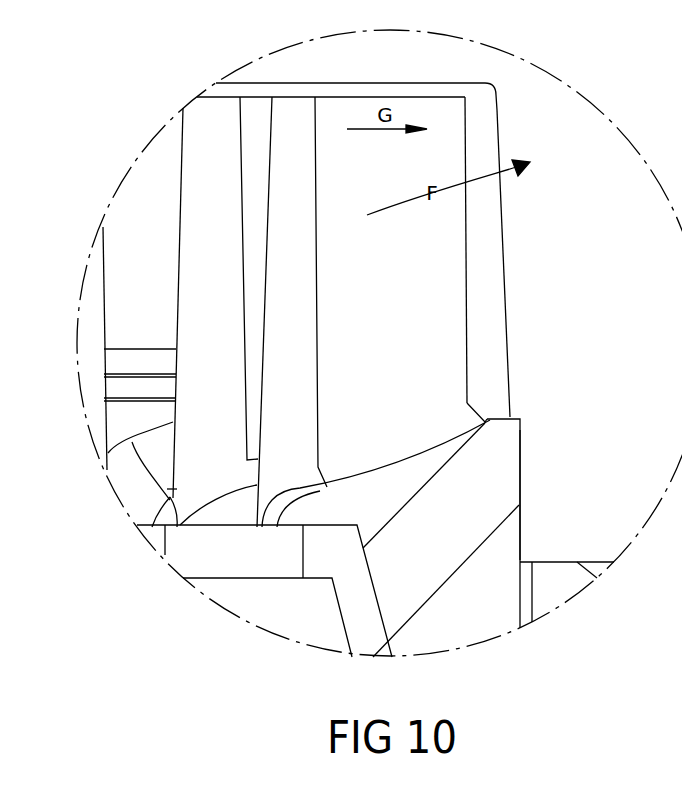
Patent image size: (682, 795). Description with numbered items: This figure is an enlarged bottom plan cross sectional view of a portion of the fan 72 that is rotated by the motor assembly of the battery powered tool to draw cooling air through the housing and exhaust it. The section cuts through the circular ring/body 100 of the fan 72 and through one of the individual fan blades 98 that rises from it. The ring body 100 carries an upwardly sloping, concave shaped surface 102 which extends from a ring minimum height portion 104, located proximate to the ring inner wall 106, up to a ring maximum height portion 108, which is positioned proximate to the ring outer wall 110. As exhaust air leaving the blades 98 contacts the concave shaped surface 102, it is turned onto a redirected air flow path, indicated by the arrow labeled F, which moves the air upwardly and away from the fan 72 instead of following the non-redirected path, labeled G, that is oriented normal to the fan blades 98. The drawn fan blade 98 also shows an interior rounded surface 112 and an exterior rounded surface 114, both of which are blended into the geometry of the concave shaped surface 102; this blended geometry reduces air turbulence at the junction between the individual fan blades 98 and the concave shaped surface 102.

The fan 72 is at (507, 552).
The fan blade 98 is at (487, 123).
The circular ring/body 100 is at (507, 495).
The concave shaped surface 102 is at (400, 450).
The ring minimum height portion 104 is at (272, 492).
The ring inner wall 106 is at (257, 482).
The ring maximum height portion 108 is at (489, 418).
The ring outer wall 110 is at (540, 463).
The interior rounded surface 112 is at (297, 108).
The exterior rounded surface 114 is at (478, 102).